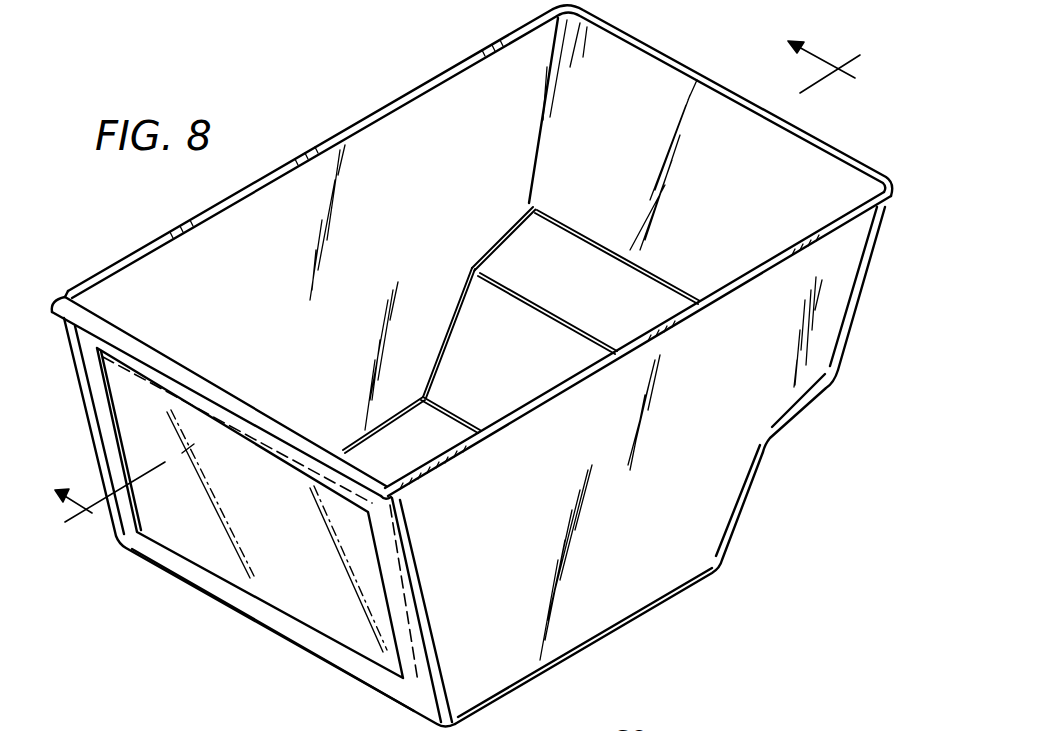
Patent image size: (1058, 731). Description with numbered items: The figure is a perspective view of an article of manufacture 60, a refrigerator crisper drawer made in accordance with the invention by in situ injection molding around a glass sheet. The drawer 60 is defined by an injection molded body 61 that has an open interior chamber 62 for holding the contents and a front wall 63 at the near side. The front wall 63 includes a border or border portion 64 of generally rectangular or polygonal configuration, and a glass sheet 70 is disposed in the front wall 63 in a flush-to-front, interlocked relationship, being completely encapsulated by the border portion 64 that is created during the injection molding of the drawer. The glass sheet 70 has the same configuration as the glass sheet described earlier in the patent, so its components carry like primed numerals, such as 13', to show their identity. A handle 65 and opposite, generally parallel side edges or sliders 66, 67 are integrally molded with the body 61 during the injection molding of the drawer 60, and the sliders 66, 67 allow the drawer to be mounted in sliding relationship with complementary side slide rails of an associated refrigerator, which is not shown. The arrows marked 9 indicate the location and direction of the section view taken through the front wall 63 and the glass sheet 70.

The article of manufacture 60 is at (450, 38).
The injection molded body 61 is at (713, 498).
The interior chamber 62 is at (440, 241).
The front wall 63 is at (94, 424).
The border portion 64 is at (176, 553).
The handle 65 is at (188, 372).
The side edge or slider 66 is at (340, 130).
The side edge or slider 67 is at (488, 433).
The glass sheet 70 is at (329, 594).
The window panel 13' is at (277, 531).
The section line 9- 9 is at (457, 288).